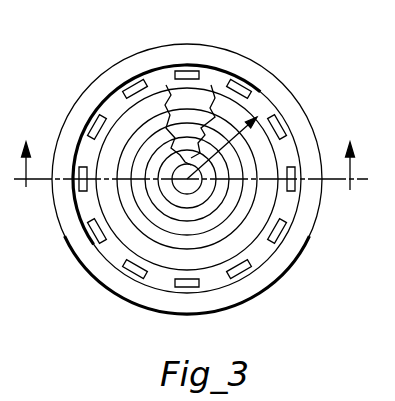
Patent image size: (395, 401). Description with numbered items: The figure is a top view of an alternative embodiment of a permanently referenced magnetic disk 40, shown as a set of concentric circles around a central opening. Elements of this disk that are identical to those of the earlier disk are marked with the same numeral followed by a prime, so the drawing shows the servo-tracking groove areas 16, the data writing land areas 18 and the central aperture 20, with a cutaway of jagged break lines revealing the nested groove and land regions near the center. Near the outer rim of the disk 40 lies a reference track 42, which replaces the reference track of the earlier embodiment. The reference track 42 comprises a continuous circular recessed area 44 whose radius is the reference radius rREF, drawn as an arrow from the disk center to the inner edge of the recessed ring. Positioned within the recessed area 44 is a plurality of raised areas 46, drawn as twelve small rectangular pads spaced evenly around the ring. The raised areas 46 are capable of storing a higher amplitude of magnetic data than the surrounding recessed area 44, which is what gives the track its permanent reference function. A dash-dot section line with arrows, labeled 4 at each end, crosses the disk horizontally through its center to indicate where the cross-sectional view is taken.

The servo-tracking (groove) areas 16 is at (161, 175).
The data writing (land) areas 18 is at (211, 85).
The aperture 20 is at (183, 164).
The permanently referenced magnetic disk 40 is at (290, 279).
The reference track 42 is at (258, 88).
The continuous circular recessed area 44 is at (290, 161).
The raised areas 46 is at (102, 116).
The reference radius rREF is at (257, 117).
The section line 4- 4 is at (189, 174).